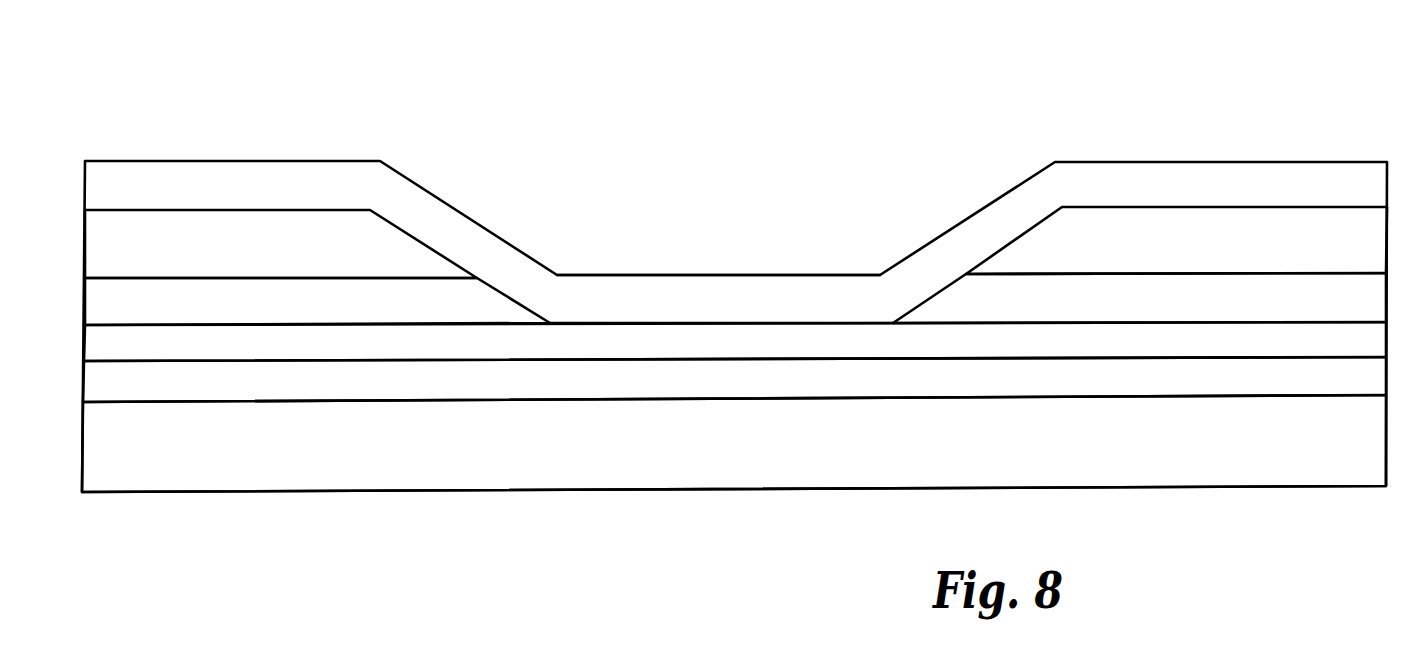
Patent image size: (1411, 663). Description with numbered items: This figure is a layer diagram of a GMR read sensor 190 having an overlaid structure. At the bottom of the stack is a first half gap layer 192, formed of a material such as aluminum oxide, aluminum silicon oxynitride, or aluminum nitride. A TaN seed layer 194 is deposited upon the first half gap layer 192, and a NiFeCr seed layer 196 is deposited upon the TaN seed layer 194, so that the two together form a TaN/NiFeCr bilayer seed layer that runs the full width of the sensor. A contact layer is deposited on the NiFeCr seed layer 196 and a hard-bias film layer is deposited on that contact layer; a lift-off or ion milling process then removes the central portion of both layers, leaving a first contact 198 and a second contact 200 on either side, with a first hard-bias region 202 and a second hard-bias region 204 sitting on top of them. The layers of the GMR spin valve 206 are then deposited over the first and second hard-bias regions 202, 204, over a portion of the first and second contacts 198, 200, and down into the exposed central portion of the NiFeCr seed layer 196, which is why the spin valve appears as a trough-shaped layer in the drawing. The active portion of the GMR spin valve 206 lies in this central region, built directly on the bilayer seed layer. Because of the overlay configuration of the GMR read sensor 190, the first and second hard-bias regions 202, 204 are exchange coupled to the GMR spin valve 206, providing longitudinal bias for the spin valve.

The GMR read sensor 190 is at (1084, 85).
The first half gap layer 192 is at (743, 453).
The TaN seed layer 194 is at (742, 392).
The NiFeCr seed layer 196 is at (742, 354).
The first contact 198 is at (385, 320).
The second contact 200 is at (1036, 316).
The first hard-bias region 202 is at (366, 258).
The second hard-bias region 204 is at (1082, 262).
The GMR spin valve 206 is at (845, 314).